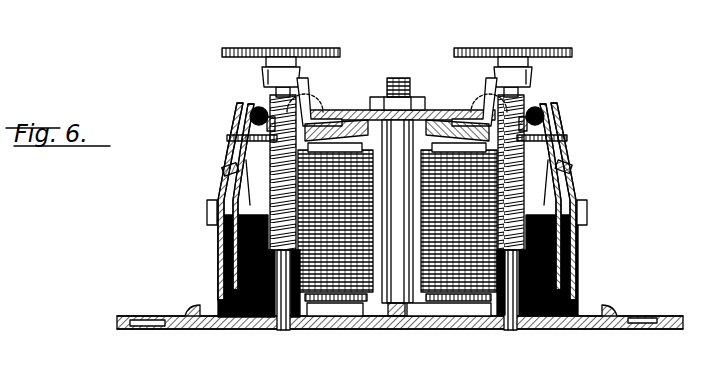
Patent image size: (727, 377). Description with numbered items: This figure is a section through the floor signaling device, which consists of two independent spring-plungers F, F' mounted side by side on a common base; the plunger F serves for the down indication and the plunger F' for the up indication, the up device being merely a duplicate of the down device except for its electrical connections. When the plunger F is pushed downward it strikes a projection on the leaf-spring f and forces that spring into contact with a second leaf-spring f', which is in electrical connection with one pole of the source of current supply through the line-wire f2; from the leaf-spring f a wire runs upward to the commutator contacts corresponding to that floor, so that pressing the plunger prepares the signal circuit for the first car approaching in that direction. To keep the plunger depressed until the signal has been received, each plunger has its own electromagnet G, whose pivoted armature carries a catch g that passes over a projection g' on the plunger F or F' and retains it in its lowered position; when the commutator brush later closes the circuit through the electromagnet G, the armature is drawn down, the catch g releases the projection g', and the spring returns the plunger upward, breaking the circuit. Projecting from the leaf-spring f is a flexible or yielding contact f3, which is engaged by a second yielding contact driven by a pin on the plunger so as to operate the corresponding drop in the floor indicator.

The spring-plunger F is at (400, 199).
The spring-plunger F' is at (513, 174).
The electromagnet G is at (343, 280).
The catch g is at (397, 115).
The projection g' is at (397, 74).
The leaf-spring f is at (395, 98).
The leaf-spring f' is at (390, 201).
The line-wire f2 is at (232, 160).
The flexible contact f3 is at (223, 176).